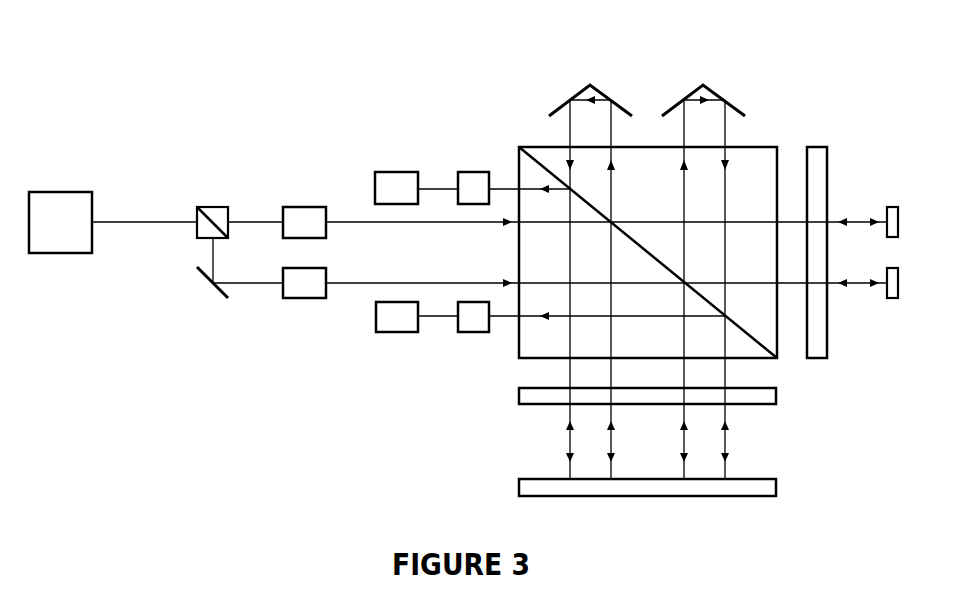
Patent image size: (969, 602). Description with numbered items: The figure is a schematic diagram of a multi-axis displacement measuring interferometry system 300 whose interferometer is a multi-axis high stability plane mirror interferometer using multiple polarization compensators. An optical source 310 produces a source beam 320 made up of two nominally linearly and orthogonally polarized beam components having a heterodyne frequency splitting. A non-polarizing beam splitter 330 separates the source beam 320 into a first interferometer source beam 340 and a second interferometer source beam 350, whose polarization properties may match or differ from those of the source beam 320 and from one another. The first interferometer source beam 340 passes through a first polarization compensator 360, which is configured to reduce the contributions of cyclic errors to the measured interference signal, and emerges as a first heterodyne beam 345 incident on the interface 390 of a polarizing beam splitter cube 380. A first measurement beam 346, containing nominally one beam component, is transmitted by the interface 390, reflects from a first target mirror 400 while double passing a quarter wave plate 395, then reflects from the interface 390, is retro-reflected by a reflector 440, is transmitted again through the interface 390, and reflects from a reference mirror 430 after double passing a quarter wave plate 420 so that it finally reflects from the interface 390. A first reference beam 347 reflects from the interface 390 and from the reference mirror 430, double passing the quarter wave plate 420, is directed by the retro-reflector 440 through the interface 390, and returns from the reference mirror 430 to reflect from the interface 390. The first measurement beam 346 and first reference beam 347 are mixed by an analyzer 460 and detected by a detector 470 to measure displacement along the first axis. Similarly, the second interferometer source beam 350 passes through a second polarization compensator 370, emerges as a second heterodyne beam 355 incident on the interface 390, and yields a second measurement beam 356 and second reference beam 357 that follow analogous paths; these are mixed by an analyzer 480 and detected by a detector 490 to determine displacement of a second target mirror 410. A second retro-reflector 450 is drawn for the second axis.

The interferometry system 300 is at (268, 52).
The optical source 310 is at (60, 222).
The source beam 320 is at (112, 220).
The non-polarizing beam splitter 330 is at (212, 205).
The first interferometer source beam 340 is at (242, 220).
The first heterodyne beam 345 is at (357, 223).
The first measurement beam 346 is at (622, 222).
The first reference beam 347 is at (609, 240).
The second interferometer source beam 350 is at (242, 281).
The second heterodyne beam 355 is at (408, 281).
The second measurement beam 356 is at (735, 283).
The second reference beam 357 is at (683, 323).
The first polarization compensator 360 is at (304, 222).
The second polarization compensator 370 is at (304, 283).
The polarizing beam splitter cube 380 is at (767, 143).
The interface 390 is at (632, 241).
The quarter wave plate 395 is at (814, 145).
The first target mirror 400 is at (893, 205).
The second target mirror 410 is at (894, 298).
The quarter wave plate 420 is at (777, 396).
The reference mirror 430 is at (777, 487).
The retro-reflector 440 is at (598, 87).
The second retroreflector 450 is at (712, 87).
The analyzer 460 is at (494, 188).
The detector 470 is at (396, 188).
The analyzer 480 is at (571, 317).
The detector 490 is at (397, 317).